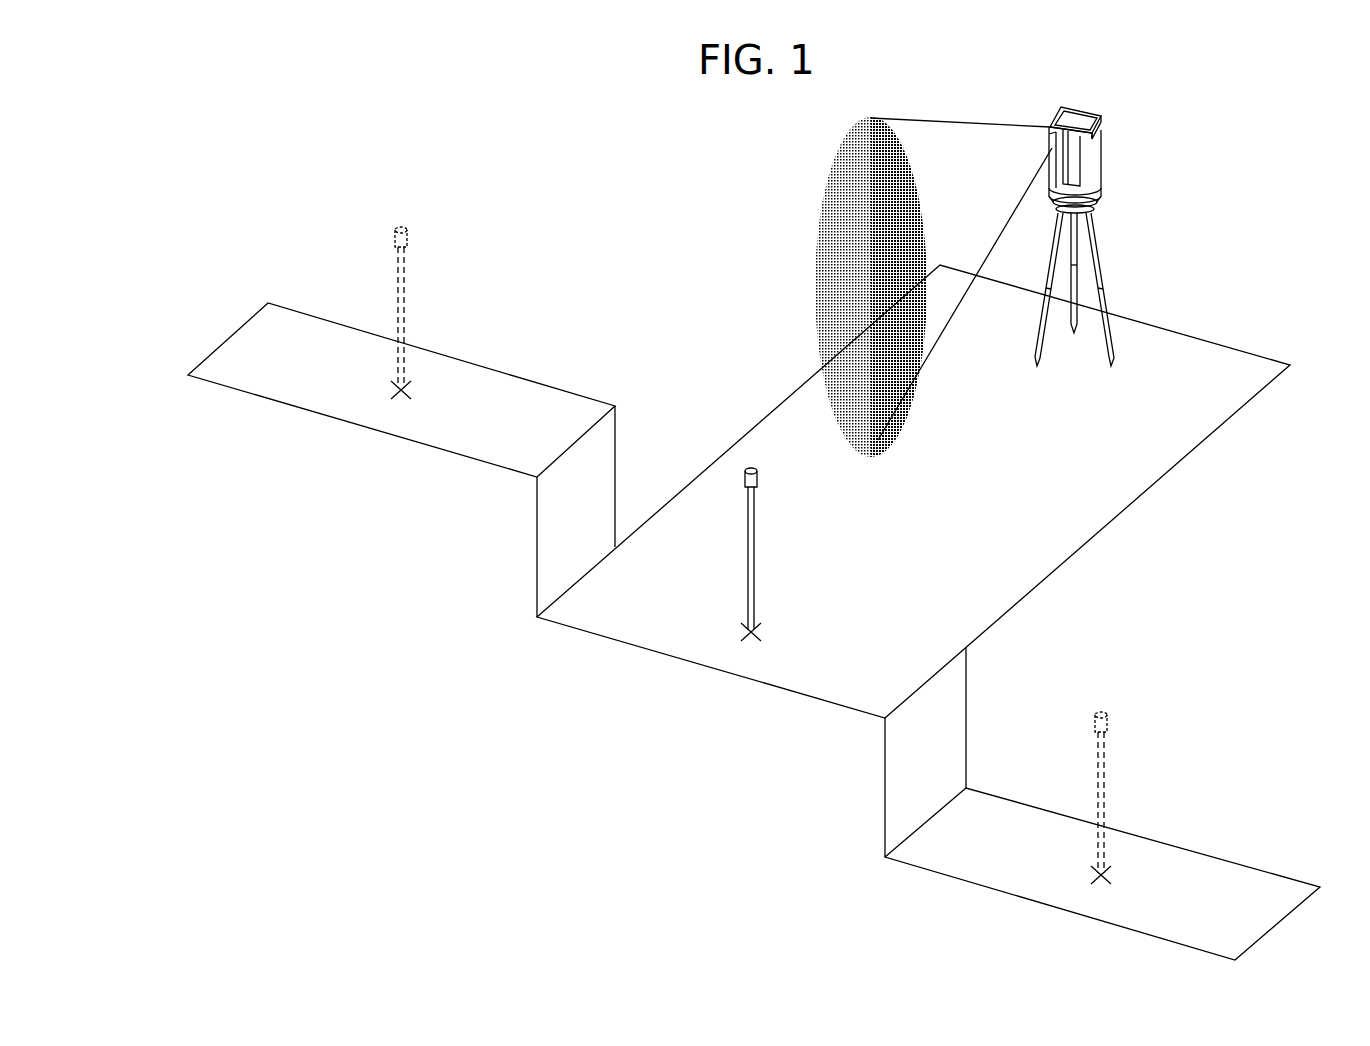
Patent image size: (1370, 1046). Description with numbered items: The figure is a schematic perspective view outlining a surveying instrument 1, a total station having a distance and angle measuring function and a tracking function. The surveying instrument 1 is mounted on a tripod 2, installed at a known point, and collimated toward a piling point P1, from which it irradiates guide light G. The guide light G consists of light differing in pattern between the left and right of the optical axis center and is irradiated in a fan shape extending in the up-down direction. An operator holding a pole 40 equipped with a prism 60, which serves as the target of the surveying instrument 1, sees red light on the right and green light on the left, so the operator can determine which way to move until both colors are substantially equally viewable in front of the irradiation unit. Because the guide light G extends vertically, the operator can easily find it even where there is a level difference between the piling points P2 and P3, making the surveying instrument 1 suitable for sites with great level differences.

The surveying instrument 1 is at (1103, 159).
The tripod 2 is at (1119, 263).
The pole 40 is at (757, 567).
The prism 60 is at (757, 478).
The guide light G is at (803, 272).
The piling point P1 is at (771, 632).
The piling point P2 is at (421, 392).
The piling point P3 is at (1121, 877).